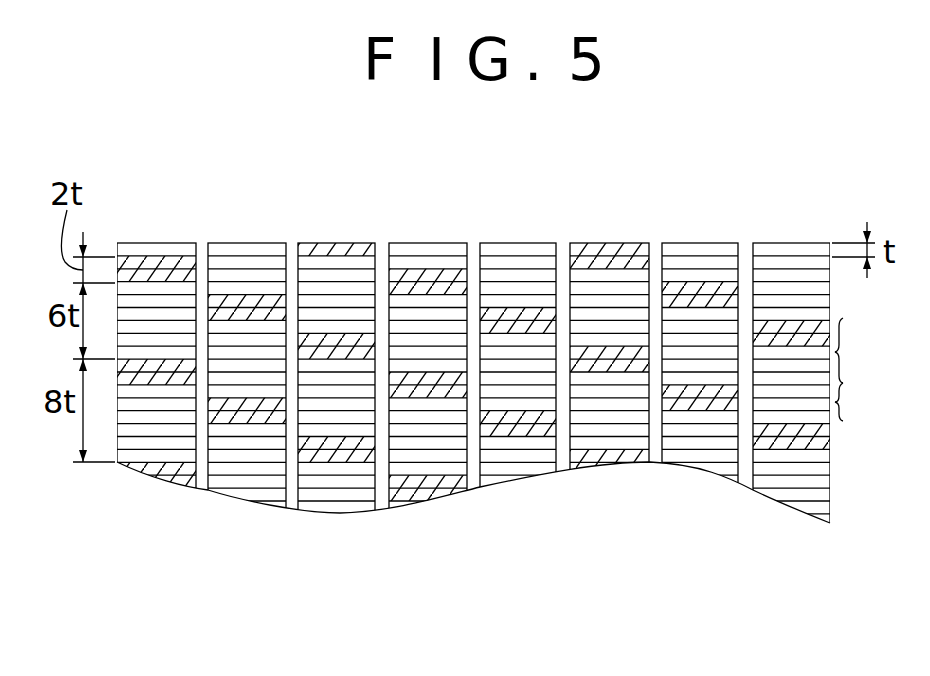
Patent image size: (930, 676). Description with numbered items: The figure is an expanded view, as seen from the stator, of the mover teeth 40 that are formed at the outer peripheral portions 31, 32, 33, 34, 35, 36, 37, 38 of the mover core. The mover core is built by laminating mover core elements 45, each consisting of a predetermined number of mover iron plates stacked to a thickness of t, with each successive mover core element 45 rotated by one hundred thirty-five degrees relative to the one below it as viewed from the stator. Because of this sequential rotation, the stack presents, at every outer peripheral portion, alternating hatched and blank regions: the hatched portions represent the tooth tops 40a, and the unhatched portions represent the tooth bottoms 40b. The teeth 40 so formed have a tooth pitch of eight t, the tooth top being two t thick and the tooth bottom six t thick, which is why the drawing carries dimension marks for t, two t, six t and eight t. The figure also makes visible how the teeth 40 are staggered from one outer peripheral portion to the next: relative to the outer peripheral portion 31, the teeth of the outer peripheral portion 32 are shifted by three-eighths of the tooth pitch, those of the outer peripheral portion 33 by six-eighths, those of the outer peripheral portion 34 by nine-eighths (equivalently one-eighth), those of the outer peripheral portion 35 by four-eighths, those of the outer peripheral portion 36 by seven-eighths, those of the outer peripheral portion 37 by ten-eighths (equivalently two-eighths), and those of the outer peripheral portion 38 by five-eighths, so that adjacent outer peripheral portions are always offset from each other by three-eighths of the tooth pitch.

The outer peripheral portion 31 is at (160, 243).
The outer peripheral portion 32 is at (252, 243).
The outer peripheral portion 33 is at (339, 243).
The outer peripheral portion 34 is at (428, 243).
The outer peripheral portion 35 is at (522, 243).
The outer peripheral portion 36 is at (617, 243).
The outer peripheral portion 37 is at (703, 243).
The outer peripheral portion 38 is at (756, 382).
The mover teeth 40 is at (858, 295).
The tooth tops 40a is at (848, 335).
The tooth bottoms 40b is at (847, 384).
The mover core elements 45 is at (778, 442).